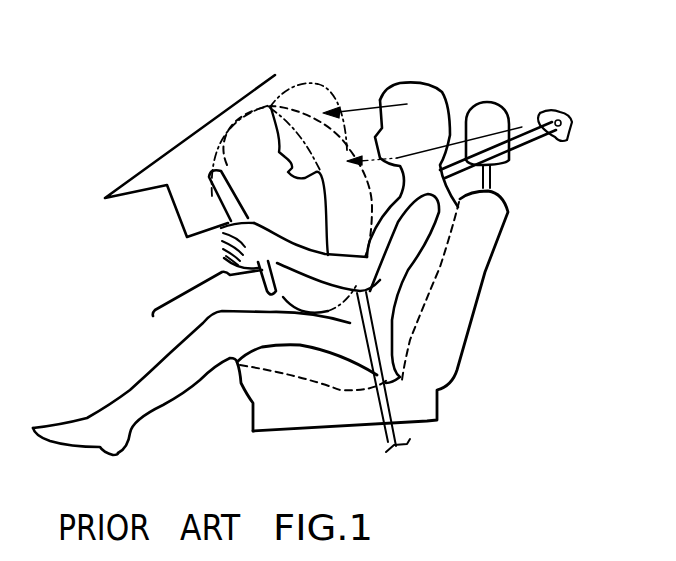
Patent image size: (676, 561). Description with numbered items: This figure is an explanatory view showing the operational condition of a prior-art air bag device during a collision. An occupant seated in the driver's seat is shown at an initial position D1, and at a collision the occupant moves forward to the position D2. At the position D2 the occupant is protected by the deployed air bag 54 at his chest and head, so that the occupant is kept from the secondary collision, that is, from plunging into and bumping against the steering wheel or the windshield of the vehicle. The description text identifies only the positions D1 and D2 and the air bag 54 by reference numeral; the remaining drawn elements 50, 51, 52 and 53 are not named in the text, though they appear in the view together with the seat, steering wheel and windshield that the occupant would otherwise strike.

The seat belt webbing 50 is at (541, 156).
The belt anchor 51 is at (530, 130).
The buckle 52 is at (377, 380).
The seat cushion 53 is at (306, 341).
The air bag 54 is at (272, 106).
The position of an occupant D1 is at (441, 84).
The position of an occupant D2 is at (349, 156).